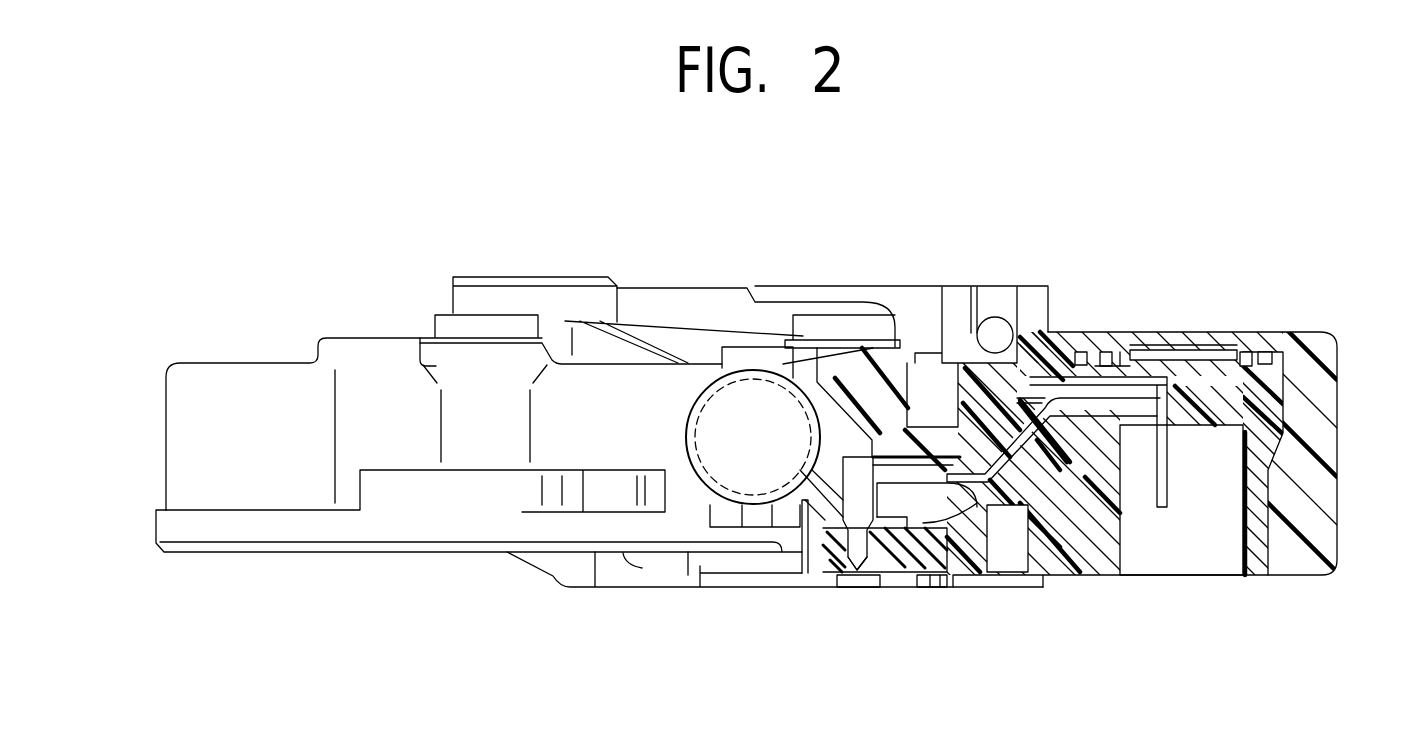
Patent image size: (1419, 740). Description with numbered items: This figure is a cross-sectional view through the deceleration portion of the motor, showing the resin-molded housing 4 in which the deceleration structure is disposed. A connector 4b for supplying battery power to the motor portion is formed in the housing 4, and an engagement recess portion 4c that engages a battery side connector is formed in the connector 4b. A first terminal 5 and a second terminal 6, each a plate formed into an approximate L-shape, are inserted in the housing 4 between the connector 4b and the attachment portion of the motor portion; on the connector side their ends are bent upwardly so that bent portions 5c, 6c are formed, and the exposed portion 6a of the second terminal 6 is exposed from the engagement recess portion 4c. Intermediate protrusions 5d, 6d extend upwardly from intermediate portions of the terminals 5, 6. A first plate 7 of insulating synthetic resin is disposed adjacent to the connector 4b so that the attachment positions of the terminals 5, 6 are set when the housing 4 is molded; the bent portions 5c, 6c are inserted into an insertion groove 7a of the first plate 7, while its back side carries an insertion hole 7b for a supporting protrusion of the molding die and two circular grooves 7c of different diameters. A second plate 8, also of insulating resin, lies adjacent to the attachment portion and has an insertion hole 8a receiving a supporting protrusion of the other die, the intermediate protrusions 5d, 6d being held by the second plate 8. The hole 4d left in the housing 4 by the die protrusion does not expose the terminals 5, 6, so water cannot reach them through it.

The housing 4 is at (250, 375).
The connector 4b is at (1338, 543).
The engagement recess portion 4c is at (1122, 548).
The hole 4d is at (1222, 352).
The first terminal 5 is at (1033, 450).
The bent portion 5c is at (1158, 347).
The intermediate protrusion 5d is at (940, 590).
The second terminal 6 is at (1005, 415).
The exposed portion 6a is at (1173, 487).
The bent portion 6c is at (1110, 355).
The intermediate protrusion 6d is at (852, 577).
The first plate 7 is at (1285, 388).
The insertion groove 7a is at (1082, 352).
The insertion hole 7b is at (1195, 348).
The circular groove 7c is at (1267, 352).
The second plate 8 is at (823, 587).
The insertion hole 8a is at (877, 587).